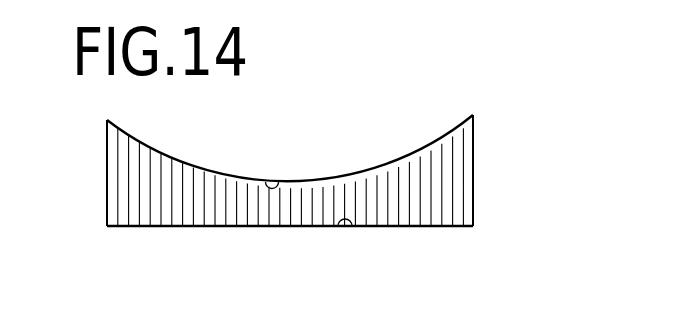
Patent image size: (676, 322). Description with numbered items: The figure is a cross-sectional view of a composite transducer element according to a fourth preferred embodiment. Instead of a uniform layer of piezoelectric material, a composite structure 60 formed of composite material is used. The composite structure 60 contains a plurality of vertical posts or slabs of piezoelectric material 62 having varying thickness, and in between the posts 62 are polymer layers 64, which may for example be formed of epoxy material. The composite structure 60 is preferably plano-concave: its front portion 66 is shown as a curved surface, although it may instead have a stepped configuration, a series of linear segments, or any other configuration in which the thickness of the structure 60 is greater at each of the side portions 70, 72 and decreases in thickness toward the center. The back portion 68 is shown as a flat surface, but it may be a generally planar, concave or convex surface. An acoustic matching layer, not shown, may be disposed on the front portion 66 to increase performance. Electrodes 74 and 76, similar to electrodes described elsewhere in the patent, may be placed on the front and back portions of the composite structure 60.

The composite structure 60 is at (506, 114).
The posts of piezoelectric material 62 is at (150, 147).
The polymer layers 64 is at (146, 156).
The front portion 66 is at (280, 182).
The back portion 68 is at (348, 233).
The side portion 70 is at (107, 169).
The side portion 72 is at (473, 175).
The electrode 74 is at (251, 228).
The electrode 76 is at (375, 167).